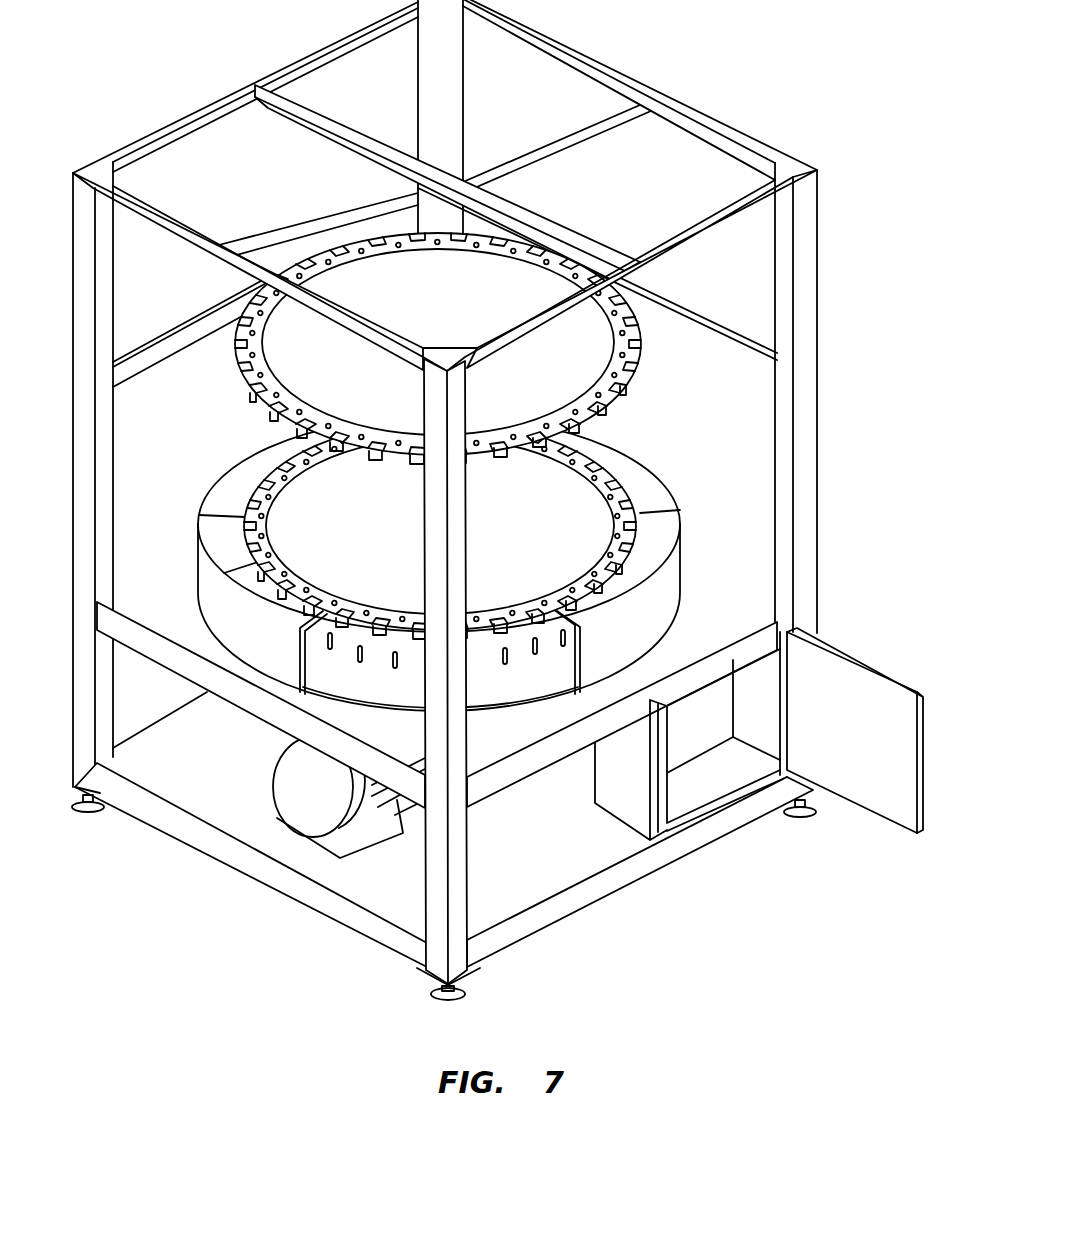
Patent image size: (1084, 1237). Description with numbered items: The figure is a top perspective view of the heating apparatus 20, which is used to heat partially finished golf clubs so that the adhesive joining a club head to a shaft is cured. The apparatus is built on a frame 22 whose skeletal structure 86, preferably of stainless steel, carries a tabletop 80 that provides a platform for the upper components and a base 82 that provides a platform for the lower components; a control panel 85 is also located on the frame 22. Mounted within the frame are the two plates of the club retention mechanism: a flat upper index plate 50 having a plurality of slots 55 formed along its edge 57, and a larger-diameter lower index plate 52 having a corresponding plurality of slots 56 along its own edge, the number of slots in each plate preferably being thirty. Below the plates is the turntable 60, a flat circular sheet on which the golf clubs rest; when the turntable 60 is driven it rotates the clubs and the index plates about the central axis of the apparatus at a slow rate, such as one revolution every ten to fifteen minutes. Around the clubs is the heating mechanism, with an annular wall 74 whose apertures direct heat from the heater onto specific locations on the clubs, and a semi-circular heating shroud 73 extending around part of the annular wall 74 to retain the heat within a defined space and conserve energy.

The heating apparatus 20 is at (493, 500).
The frame 22 is at (588, 55).
The upper index plate 50 is at (528, 292).
The lower index plate 52 is at (567, 500).
The slots 55 is at (633, 377).
The edge 57 is at (633, 400).
The slots 56 is at (648, 552).
The turntable 60 is at (372, 683).
The heating shroud 73 is at (668, 583).
The annular wall 74 is at (343, 650).
The tabletop 80 is at (157, 565).
The base 82 is at (510, 895).
The control panel 85 is at (893, 800).
The skeletal structure 86 is at (75, 200).